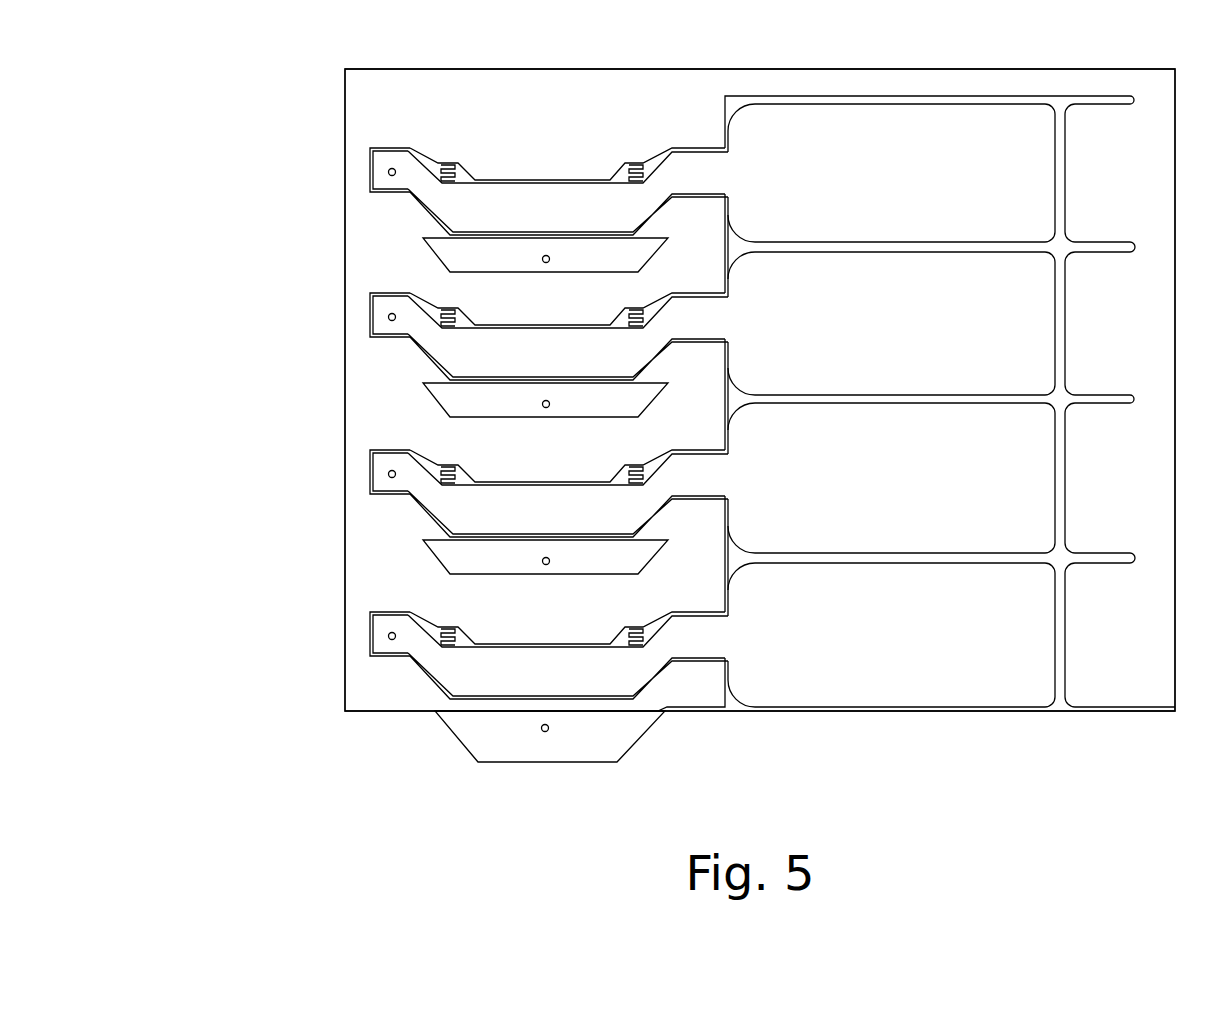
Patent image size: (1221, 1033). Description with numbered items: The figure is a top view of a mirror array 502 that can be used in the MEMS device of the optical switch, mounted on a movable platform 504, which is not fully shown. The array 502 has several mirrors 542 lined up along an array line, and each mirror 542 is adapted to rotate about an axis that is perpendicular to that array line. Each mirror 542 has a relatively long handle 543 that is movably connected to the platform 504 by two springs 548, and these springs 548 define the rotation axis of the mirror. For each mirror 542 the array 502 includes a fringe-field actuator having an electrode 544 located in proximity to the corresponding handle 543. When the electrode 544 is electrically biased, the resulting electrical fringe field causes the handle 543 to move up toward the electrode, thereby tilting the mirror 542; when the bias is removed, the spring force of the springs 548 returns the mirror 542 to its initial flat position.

The mirror array 502 is at (138, 702).
The movable platform 504 is at (577, 87).
The mirror 542 is at (912, 646).
The handle 543 is at (564, 680).
The electrode 544 is at (482, 737).
The spring 548 is at (639, 628).